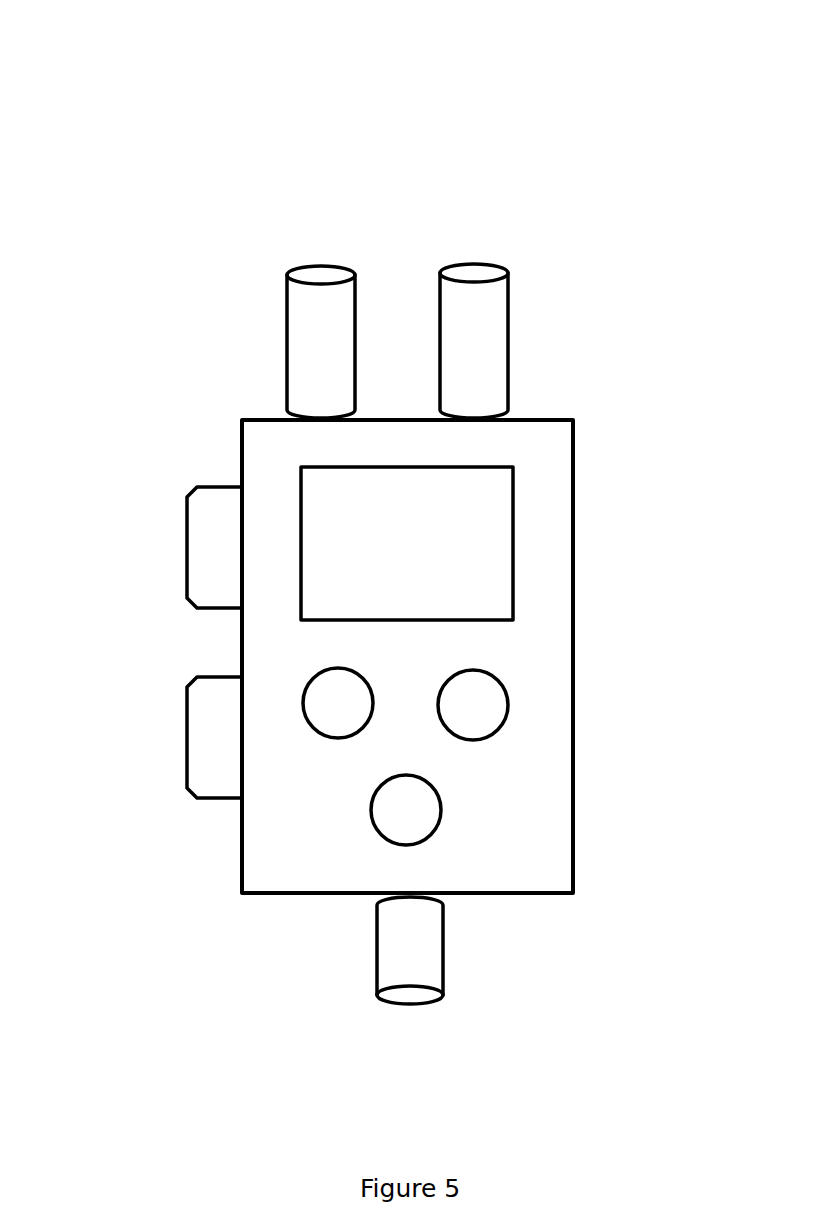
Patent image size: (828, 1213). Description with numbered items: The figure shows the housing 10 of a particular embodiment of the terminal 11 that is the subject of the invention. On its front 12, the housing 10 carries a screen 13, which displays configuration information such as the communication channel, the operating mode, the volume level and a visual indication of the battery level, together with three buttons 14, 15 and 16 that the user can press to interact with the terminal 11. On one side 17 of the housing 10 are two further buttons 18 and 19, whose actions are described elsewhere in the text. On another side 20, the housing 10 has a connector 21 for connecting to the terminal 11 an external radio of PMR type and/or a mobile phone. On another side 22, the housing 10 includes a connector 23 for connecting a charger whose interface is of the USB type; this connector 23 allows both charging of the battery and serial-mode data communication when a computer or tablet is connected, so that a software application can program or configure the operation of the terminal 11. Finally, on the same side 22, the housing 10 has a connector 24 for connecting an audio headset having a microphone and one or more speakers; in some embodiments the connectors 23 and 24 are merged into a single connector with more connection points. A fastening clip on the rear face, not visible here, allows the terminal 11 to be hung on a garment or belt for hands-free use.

The housing 10 is at (555, 655).
The terminal 11 is at (373, 543).
The front 12 is at (408, 680).
The screen 13 is at (488, 550).
The button 14 is at (322, 702).
The button 15 is at (502, 727).
The button 16 is at (405, 833).
The side 17 is at (144, 660).
The button 18 is at (205, 522).
The button 19 is at (200, 762).
The side 20 is at (408, 984).
The connector 21 is at (430, 973).
The side 22 is at (393, 307).
The connector 23 is at (493, 302).
The connector 24 is at (307, 302).